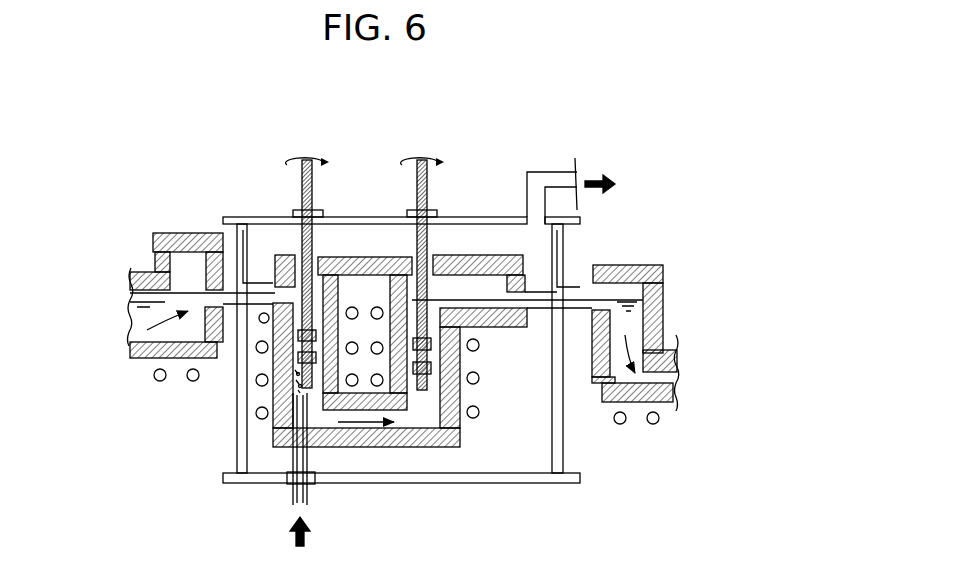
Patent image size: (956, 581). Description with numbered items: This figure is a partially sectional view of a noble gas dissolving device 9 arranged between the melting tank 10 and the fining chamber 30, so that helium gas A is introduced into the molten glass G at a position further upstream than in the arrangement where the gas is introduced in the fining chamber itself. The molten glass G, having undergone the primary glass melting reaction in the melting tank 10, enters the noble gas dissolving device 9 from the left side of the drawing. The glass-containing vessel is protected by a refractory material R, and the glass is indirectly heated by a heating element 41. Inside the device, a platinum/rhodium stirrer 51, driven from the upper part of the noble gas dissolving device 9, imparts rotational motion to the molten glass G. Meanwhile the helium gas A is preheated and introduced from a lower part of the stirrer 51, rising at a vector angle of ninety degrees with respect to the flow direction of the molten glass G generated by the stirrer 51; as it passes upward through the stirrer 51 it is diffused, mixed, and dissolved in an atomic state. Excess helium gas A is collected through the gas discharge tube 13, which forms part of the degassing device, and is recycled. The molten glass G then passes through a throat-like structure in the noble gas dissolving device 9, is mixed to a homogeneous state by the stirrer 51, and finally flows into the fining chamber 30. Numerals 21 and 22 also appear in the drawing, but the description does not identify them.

The melting tank 10 is at (140, 228).
The refractory material R is at (182, 235).
The stirrer 51 is at (431, 197).
The gas discharge tube 13 is at (553, 208).
The heating element 41 is at (187, 380).
The gas nozzle 22 is at (277, 393).
The gas supply pipe 21 is at (287, 477).
The helium gas A is at (305, 537).
The molten glass G is at (413, 417).
The noble gas dissolving device 9 is at (489, 433).
The fining chamber 30 is at (655, 439).